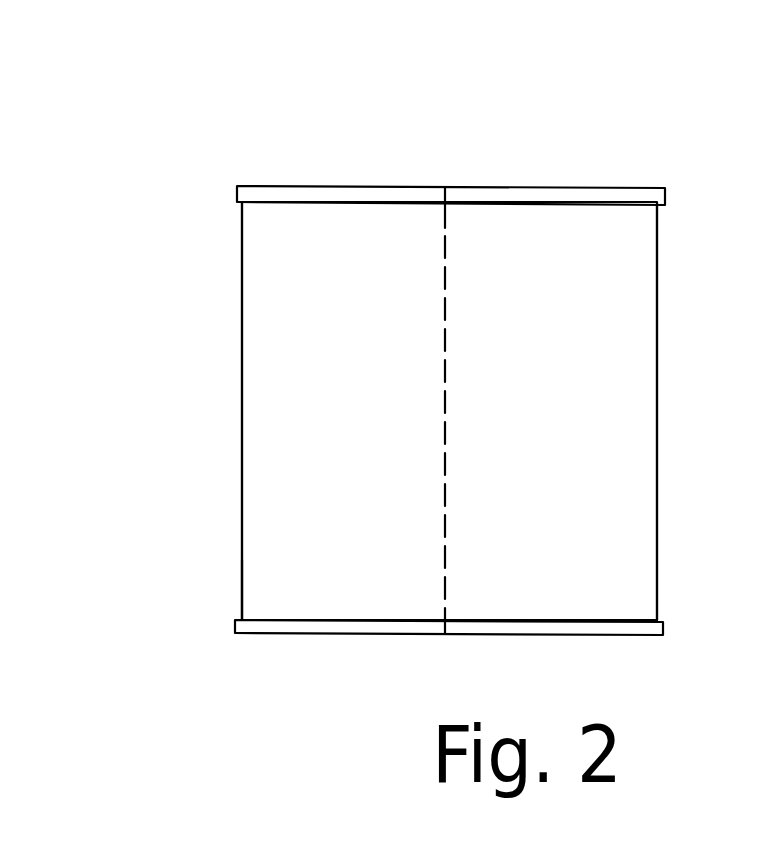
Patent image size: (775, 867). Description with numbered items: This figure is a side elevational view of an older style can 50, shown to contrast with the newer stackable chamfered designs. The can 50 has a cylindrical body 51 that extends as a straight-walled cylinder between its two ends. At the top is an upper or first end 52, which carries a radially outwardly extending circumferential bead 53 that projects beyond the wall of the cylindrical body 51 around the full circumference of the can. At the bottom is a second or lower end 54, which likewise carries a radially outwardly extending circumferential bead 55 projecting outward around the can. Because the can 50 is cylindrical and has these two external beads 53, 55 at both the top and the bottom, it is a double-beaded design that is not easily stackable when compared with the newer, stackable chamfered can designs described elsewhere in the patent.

The older style can 50 is at (503, 180).
The cylindrical body 51 is at (622, 262).
The upper or first end 52 is at (232, 208).
The circumferential bead 53 is at (237, 188).
The second or lower end 54 is at (238, 604).
The circumferential bead 55 is at (235, 633).